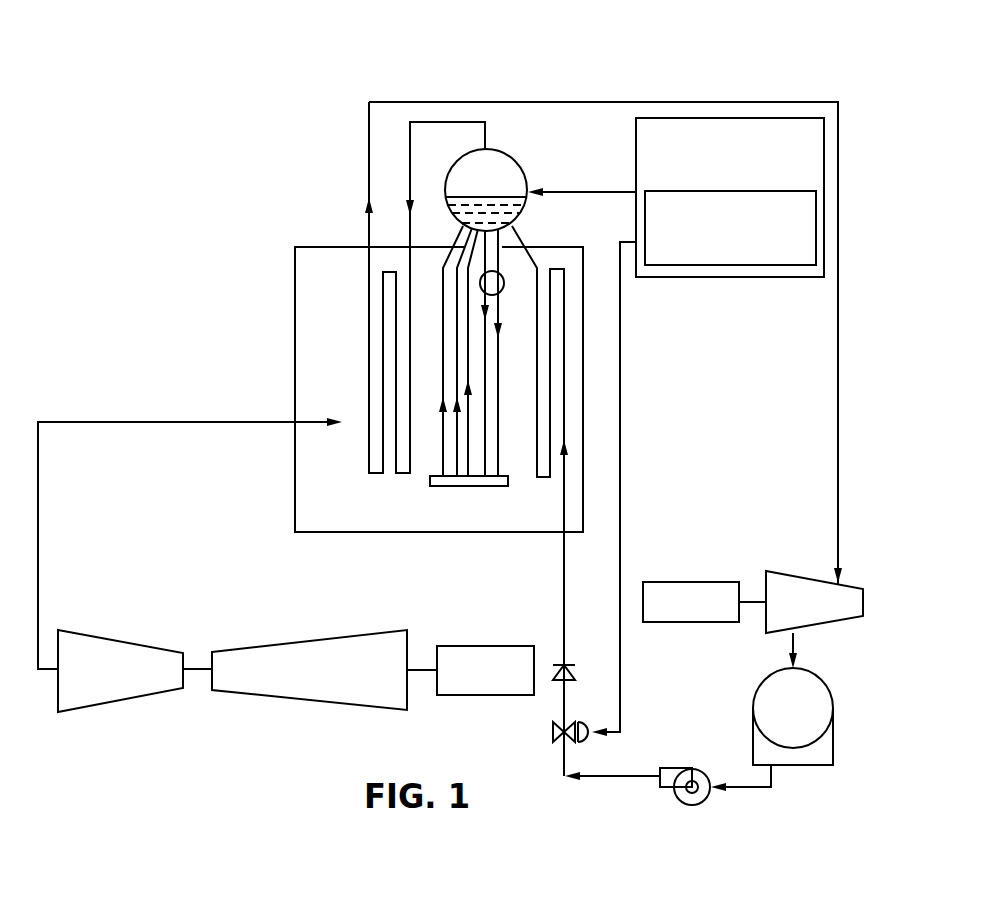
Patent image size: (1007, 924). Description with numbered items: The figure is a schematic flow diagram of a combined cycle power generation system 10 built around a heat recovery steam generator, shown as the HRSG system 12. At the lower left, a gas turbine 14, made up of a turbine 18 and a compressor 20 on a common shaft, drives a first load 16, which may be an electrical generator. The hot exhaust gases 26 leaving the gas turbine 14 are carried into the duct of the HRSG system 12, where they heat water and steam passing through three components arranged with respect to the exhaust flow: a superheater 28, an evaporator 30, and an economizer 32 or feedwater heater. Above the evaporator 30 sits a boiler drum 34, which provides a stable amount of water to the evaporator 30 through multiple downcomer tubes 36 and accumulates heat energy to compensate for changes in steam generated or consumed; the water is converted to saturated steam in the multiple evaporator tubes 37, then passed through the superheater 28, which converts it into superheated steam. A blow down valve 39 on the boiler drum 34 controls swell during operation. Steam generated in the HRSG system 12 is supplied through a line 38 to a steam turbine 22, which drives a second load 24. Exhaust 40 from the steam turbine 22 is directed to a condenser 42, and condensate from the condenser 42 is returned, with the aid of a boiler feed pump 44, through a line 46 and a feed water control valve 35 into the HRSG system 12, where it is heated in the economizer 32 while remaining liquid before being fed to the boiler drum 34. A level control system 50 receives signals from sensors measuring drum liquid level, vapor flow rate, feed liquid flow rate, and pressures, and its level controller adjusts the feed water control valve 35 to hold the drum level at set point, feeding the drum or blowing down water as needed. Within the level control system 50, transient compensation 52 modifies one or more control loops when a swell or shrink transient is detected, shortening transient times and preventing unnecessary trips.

The combined cycle power generation system 10 is at (611, 56).
The HRSG system 12 is at (439, 427).
The gas turbine 14 is at (247, 682).
The first load 16 is at (485, 639).
The turbine 18 is at (120, 643).
The compressor 20 is at (309, 645).
The steam turbine 22 is at (814, 574).
The second load 24 is at (704, 569).
The hot exhaust gases 26 is at (190, 514).
The superheater 28 is at (420, 335).
The evaporator 30 is at (469, 522).
The economizer 32 is at (535, 397).
The boiler drum 34 is at (505, 173).
The feed water control valve 35 is at (542, 739).
The downcomer tubes 36 is at (507, 353).
The evaporator tubes 37 is at (444, 351).
The line 38 is at (603, 307).
The blow down valve 39 is at (507, 306).
The exhaust 40 is at (823, 647).
The condenser 42 is at (769, 717).
The boiler feed pump 44 is at (637, 754).
The line 46 is at (583, 538).
The level control system 50 is at (676, 427).
The transient compensation 52 is at (730, 228).